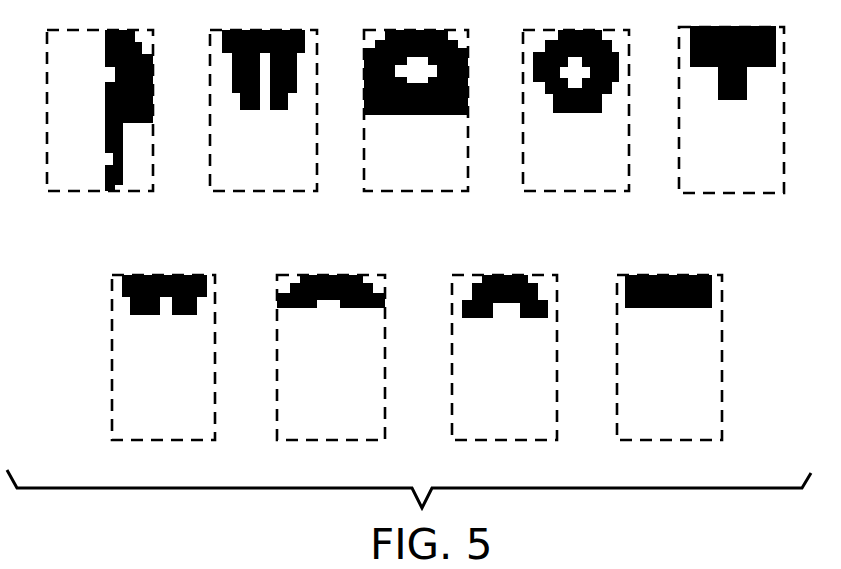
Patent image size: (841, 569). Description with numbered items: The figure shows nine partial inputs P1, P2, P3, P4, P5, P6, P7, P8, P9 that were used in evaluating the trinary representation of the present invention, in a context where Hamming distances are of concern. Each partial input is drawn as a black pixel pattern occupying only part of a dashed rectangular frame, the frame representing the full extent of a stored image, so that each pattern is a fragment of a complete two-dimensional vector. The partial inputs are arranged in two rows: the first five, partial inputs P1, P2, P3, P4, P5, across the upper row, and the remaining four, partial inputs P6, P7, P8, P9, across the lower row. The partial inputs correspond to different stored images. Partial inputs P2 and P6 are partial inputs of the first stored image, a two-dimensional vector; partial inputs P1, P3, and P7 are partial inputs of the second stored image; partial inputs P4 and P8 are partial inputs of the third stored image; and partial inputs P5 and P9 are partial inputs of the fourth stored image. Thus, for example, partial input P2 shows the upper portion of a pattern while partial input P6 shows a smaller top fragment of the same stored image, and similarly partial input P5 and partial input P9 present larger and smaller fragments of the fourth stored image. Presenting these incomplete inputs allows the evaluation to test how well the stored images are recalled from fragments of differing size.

The partial input P1 is at (100, 131).
The partial input P2 is at (263, 131).
The partial input P3 is at (416, 131).
The partial input P4 is at (576, 131).
The partial input P5 is at (731, 130).
The partial input P6 is at (163, 376).
The partial input P7 is at (331, 376).
The partial input P8 is at (504, 376).
The partial input P9 is at (669, 377).